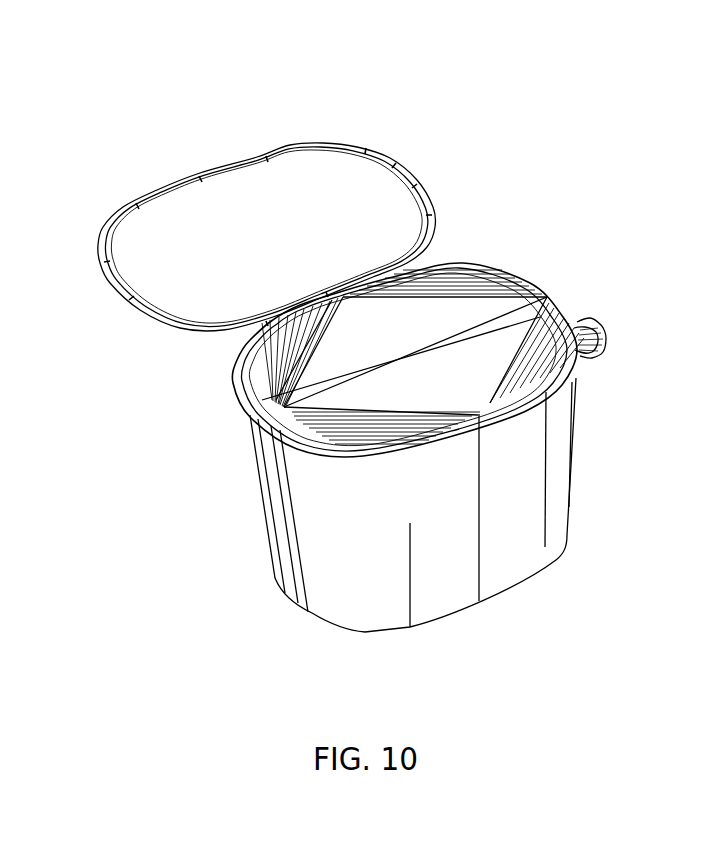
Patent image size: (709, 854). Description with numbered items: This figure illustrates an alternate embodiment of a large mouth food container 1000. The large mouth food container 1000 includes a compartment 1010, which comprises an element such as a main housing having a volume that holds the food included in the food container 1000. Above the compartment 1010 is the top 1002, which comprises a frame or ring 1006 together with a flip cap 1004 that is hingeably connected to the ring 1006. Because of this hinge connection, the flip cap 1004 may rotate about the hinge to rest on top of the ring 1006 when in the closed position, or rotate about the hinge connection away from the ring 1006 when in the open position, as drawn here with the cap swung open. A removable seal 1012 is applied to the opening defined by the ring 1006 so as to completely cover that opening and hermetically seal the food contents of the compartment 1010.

The large mouth food container 1000 is at (133, 94).
The top 1002 is at (391, 412).
The flip cap 1004 is at (284, 215).
The ring 1006 is at (631, 311).
The compartment 1010 is at (463, 505).
The removable seal 1012 is at (339, 357).